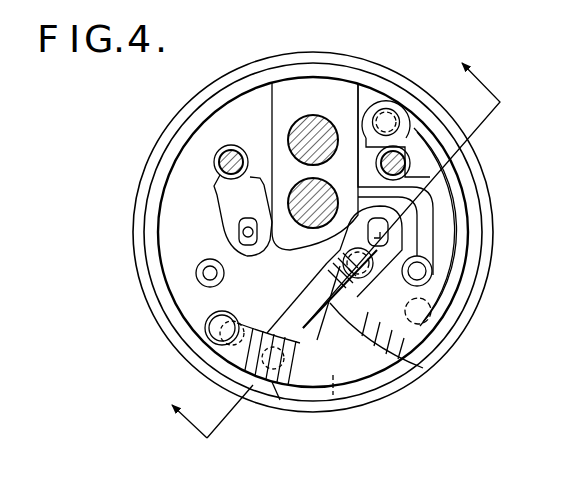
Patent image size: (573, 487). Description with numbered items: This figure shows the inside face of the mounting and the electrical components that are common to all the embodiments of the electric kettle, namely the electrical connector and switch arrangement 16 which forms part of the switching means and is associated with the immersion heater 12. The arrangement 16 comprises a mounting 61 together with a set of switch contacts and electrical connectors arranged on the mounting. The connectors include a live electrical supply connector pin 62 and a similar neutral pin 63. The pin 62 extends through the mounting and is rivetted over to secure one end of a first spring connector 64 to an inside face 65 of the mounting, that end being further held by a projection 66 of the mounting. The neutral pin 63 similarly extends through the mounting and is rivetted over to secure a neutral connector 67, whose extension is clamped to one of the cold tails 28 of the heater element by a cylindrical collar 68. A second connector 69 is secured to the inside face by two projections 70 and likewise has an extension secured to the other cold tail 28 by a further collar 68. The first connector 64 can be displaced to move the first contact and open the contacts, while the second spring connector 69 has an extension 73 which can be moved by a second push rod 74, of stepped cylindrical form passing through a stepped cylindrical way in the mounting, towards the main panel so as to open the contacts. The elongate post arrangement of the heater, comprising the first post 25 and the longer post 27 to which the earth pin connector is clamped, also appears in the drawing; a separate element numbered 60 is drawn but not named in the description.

The immersion heater 12 is at (252, 386).
The electrical connector and switch arrangement 16 is at (358, 352).
The first post 25 is at (296, 238).
The longer post 27 is at (307, 127).
The cold tails 28 is at (219, 156).
The bore 60 is at (209, 275).
The mounting 61 is at (146, 212).
The live electrical supply connector pin 62 is at (381, 238).
The neutral pin 63 is at (240, 240).
The first spring connector 64 is at (420, 367).
The inside face 65 is at (201, 301).
The projection 66 is at (368, 262).
The neutral connector 67 is at (221, 200).
The cylindrical collar 68 is at (229, 145).
The second connector 69 is at (318, 366).
The projections 70 is at (391, 121).
The extension 73 is at (210, 378).
The second push rod 74 is at (211, 323).